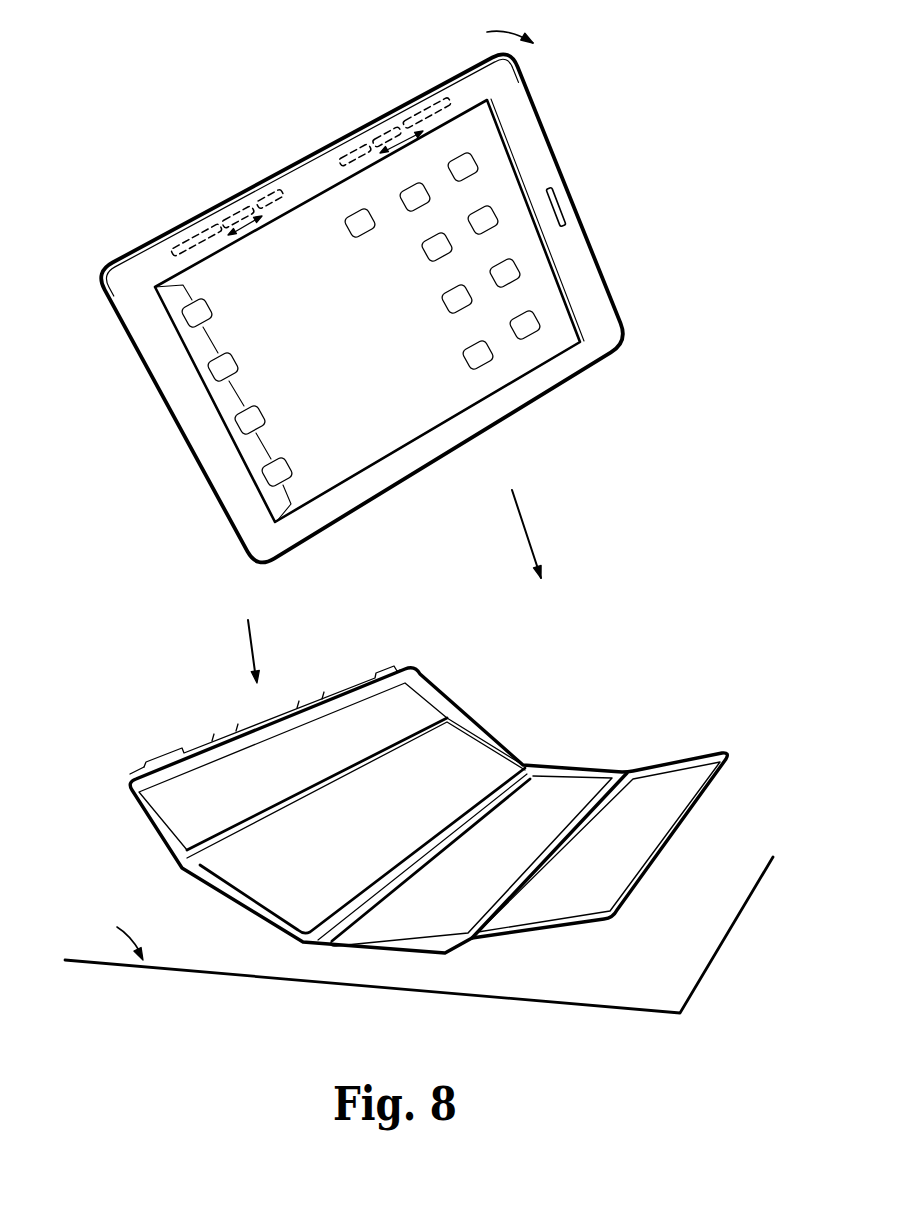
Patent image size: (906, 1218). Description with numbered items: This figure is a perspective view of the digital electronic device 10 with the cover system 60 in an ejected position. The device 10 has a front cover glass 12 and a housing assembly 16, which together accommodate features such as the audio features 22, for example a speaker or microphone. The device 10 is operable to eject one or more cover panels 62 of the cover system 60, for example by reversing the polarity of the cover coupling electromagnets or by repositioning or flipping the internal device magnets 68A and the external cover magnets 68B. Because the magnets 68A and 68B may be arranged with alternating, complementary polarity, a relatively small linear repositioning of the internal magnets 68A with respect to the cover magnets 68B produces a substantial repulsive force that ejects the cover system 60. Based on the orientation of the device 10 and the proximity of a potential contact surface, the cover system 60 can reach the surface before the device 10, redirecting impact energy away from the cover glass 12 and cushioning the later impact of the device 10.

The digital electronic device 10 is at (135, 172).
The front cover glass 12 is at (403, 415).
The housing assembly 16 is at (98, 271).
The audio features 22 is at (560, 200).
The cover system 60 is at (88, 702).
The cover panels 62 is at (567, 787).
The internal device magnets 68A is at (207, 228).
The external cover magnets 68B is at (222, 745).